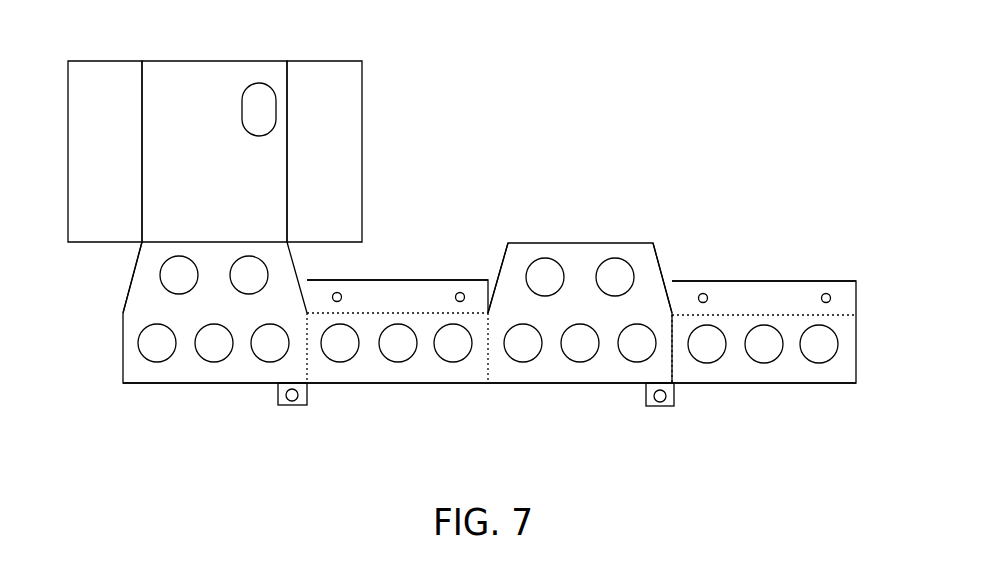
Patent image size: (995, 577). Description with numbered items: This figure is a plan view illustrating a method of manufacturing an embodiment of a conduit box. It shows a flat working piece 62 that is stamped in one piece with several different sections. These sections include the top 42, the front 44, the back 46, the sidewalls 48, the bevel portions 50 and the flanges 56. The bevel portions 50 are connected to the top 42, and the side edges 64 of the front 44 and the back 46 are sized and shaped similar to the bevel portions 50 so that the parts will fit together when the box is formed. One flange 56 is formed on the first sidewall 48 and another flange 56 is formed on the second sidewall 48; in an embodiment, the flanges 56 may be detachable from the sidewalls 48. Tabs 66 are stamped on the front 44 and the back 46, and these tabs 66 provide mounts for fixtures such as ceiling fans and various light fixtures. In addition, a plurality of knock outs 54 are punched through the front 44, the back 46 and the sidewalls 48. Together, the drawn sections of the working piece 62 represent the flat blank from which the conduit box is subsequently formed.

The top 42 is at (188, 72).
The front 44 is at (613, 372).
The back 46 is at (232, 372).
The sidewalls 48 is at (423, 372).
The bevel portions 50 is at (110, 72).
The knock outs 54 is at (176, 280).
The flanges 56 is at (410, 290).
The working piece 62 is at (684, 413).
The side edges 64 is at (135, 264).
The tabs 66 is at (285, 410).